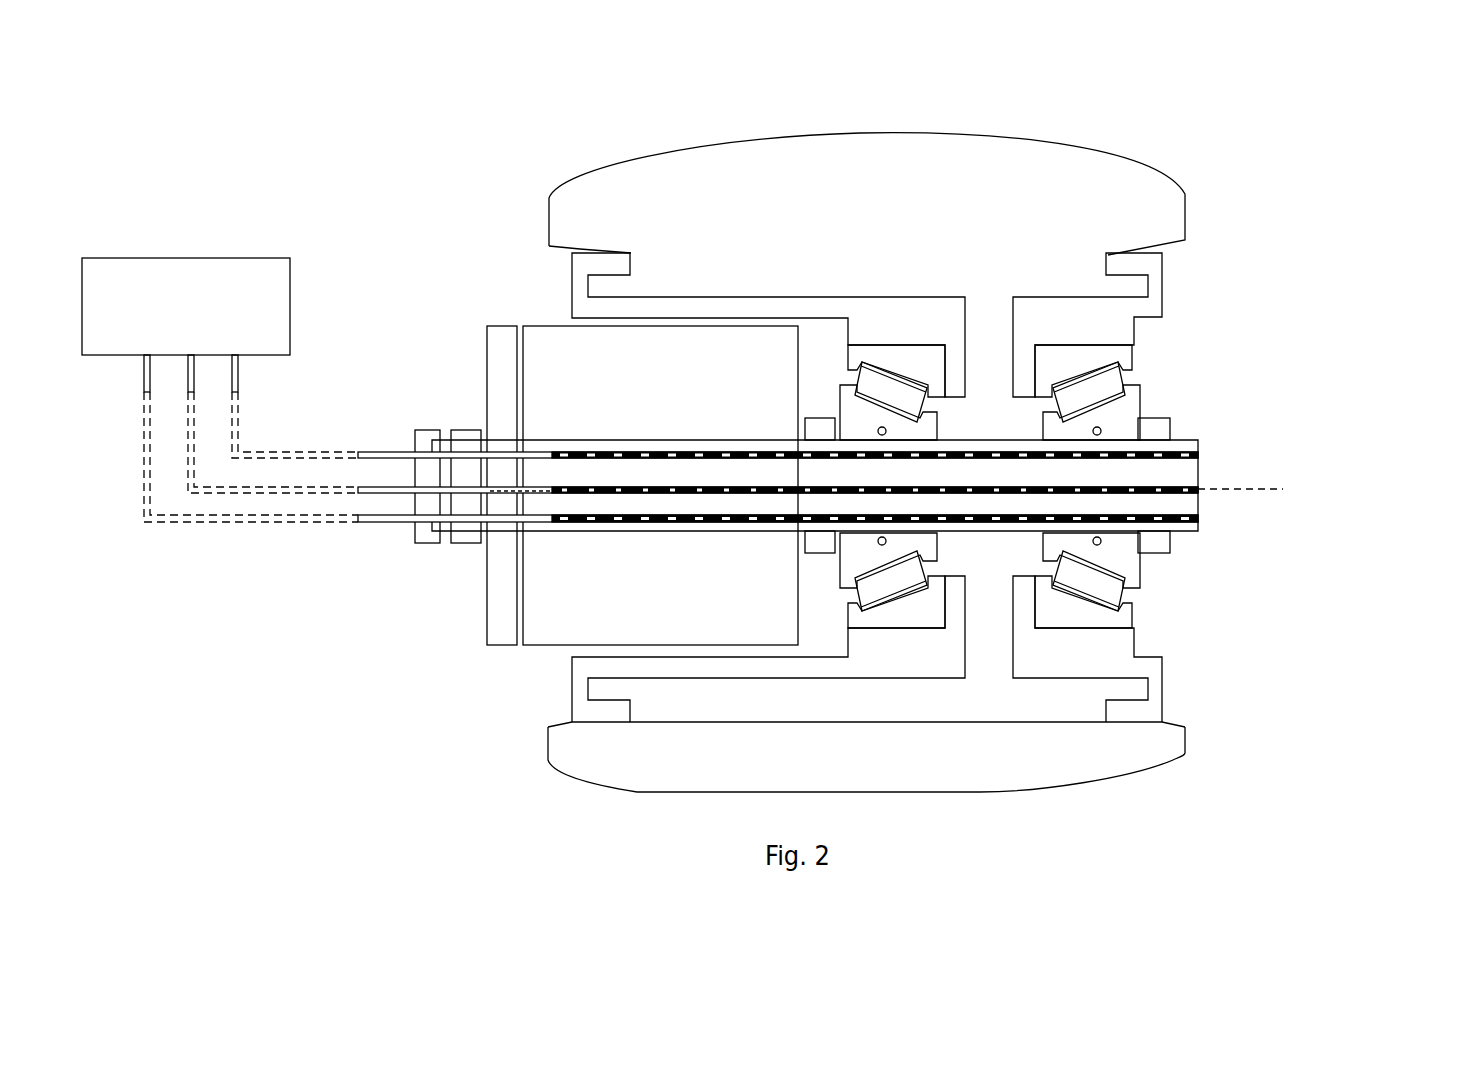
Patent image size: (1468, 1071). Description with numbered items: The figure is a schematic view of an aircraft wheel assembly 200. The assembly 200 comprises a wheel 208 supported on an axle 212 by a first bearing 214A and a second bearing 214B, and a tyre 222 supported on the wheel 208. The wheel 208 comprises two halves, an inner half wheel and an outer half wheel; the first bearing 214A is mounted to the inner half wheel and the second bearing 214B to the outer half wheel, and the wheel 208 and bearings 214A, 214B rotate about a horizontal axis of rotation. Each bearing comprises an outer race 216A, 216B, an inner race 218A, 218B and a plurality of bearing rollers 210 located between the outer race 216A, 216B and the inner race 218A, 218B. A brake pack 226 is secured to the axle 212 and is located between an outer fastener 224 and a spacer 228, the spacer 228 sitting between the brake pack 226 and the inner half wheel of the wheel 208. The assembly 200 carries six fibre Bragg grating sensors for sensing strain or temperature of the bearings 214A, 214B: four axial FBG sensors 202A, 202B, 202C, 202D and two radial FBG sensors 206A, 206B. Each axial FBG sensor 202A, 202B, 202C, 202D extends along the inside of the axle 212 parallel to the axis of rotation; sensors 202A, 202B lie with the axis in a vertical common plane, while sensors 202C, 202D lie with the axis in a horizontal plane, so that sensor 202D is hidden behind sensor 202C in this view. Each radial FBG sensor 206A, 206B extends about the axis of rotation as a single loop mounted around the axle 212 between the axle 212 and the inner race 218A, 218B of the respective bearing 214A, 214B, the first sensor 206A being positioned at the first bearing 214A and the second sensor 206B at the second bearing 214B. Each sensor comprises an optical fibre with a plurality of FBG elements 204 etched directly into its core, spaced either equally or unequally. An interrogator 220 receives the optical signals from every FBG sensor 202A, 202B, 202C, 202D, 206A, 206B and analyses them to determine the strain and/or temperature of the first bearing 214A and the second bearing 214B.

The aircraft wheel assembly 200 is at (428, 177).
The axial FBG sensor 202A is at (1198, 454).
The axial FBG sensor 202B is at (1198, 516).
The axial FBG sensor 202C is at (1198, 487).
The axial FBG sensor 202D is at (778, 490).
The FBG elements 204 is at (1175, 531).
The radial FBG sensor 206A is at (886, 541).
The radial FBG sensor 206B is at (1104, 542).
The wheel 208 is at (571, 271).
The bearing rollers 210 is at (897, 595).
The axle 212 is at (487, 545).
The first bearing 214A is at (902, 345).
The second bearing 214B is at (1077, 345).
The outer race 216A is at (879, 345).
The outer race 216B is at (1135, 354).
The inner race 218A is at (845, 382).
The inner race 218B is at (1140, 398).
The interrogator 220 is at (178, 258).
The tyre 222 is at (549, 200).
The outer fastener 224 is at (435, 428).
The brake pack 226 is at (550, 647).
The spacer 228 is at (878, 541).